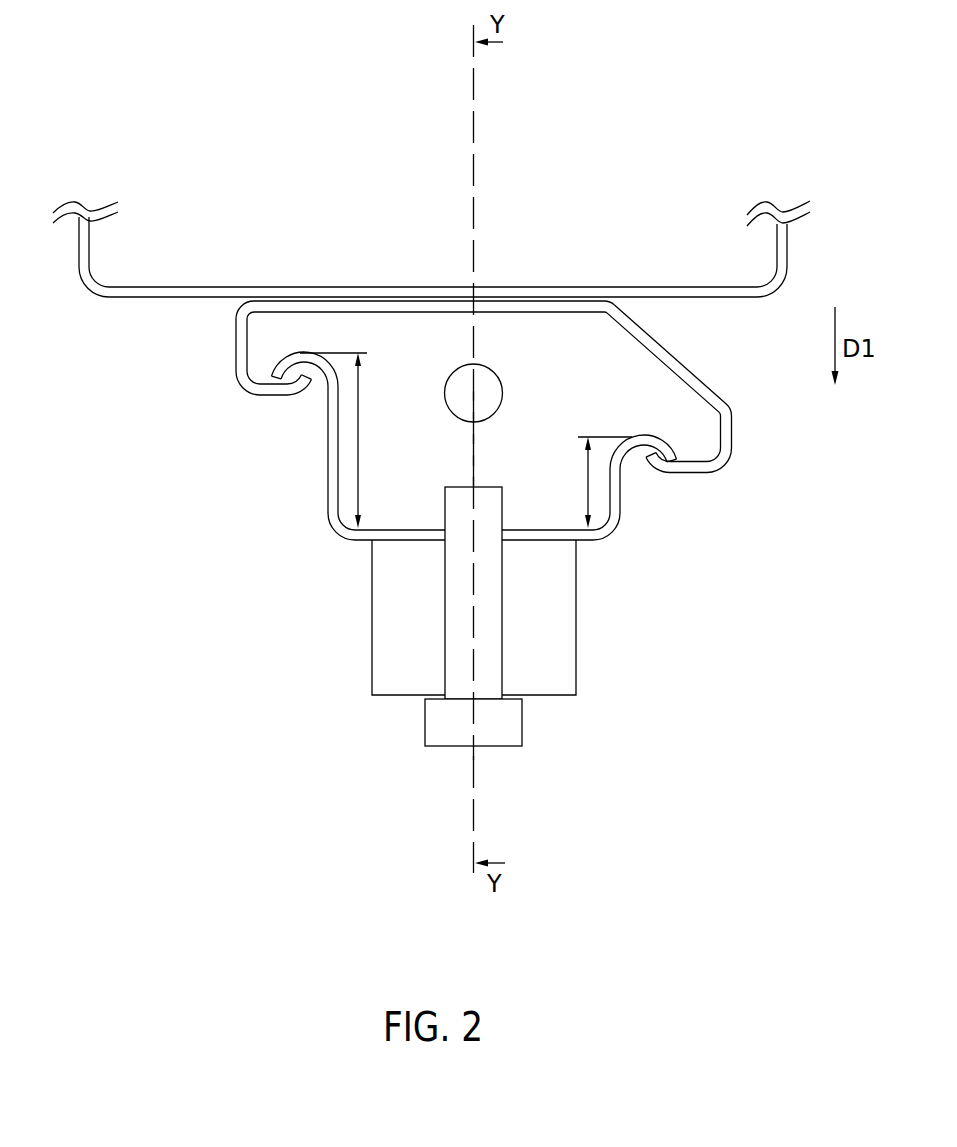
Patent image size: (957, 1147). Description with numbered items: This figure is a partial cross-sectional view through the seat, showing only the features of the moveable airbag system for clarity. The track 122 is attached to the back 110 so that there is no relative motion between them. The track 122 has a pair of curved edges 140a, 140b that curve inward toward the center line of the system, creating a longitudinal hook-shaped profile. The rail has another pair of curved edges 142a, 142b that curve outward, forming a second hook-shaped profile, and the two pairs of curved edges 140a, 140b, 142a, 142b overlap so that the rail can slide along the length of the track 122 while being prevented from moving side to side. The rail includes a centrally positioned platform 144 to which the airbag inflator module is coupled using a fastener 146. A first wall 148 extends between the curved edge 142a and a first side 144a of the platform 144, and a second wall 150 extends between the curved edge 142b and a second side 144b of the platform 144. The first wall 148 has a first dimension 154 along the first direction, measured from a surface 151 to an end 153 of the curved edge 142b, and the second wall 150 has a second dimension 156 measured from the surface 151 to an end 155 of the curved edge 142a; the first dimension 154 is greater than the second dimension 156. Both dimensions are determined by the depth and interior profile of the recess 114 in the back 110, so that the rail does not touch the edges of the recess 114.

The back 110 is at (573, 287).
The track 122 is at (480, 358).
The end of the curved edge 142b 153 is at (293, 352).
The end of the curved edge 142a 155 is at (663, 433).
The curved edge 142a is at (680, 472).
The curved edge 142b is at (273, 381).
The curved edge 140a is at (653, 475).
The curved edge 140b is at (302, 388).
The platform 144 is at (484, 515).
The first side of the platform 144a is at (327, 527).
The second side of the platform 144b is at (613, 535).
The first wall 148 is at (328, 452).
The second wall 150 is at (622, 498).
The surface 151 is at (422, 527).
The first dimension 154 is at (358, 462).
The second dimension 156 is at (588, 495).
The recess 114 is at (577, 695).
The fastener 146 is at (493, 747).